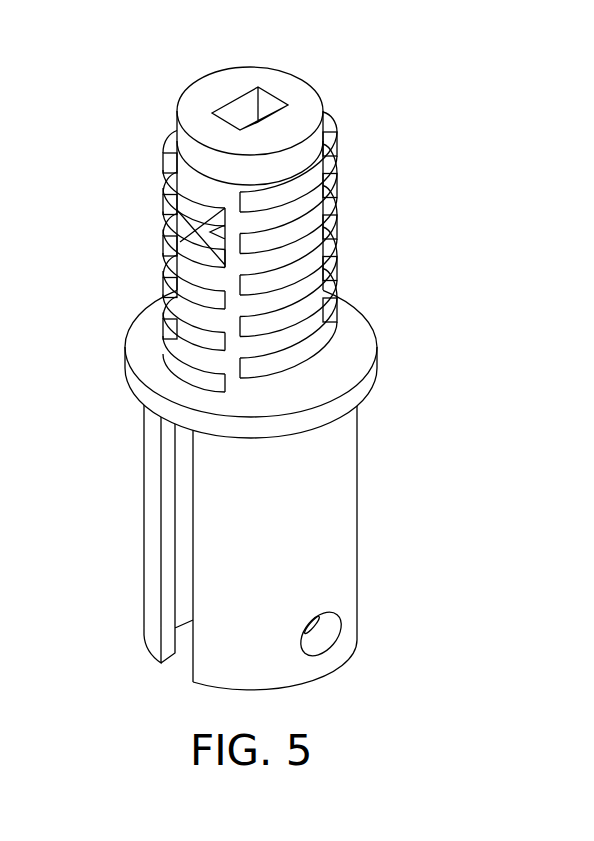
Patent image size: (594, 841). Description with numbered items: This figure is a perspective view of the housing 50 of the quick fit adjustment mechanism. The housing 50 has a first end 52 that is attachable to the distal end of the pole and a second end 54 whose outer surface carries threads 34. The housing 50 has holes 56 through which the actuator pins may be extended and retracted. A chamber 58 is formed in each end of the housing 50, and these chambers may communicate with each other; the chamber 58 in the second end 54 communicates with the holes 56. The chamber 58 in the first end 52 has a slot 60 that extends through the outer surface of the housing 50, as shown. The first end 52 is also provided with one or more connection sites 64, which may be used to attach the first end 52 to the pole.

The housing 50 is at (147, 72).
The chamber 58 is at (268, 62).
The second end 54 is at (418, 207).
The threads 34 is at (297, 298).
The holes 56 is at (177, 210).
The first end 52 is at (390, 474).
The slot 60 is at (175, 570).
The connection sites 64 is at (340, 639).